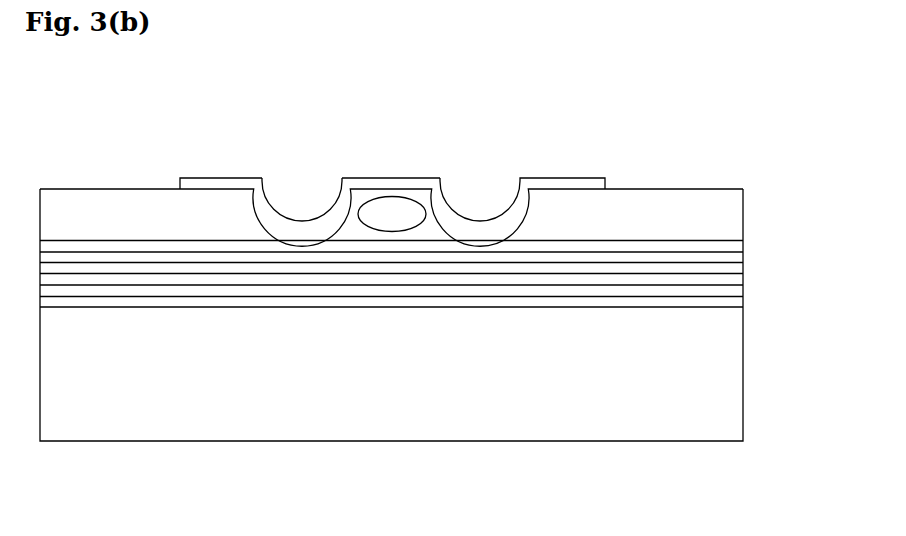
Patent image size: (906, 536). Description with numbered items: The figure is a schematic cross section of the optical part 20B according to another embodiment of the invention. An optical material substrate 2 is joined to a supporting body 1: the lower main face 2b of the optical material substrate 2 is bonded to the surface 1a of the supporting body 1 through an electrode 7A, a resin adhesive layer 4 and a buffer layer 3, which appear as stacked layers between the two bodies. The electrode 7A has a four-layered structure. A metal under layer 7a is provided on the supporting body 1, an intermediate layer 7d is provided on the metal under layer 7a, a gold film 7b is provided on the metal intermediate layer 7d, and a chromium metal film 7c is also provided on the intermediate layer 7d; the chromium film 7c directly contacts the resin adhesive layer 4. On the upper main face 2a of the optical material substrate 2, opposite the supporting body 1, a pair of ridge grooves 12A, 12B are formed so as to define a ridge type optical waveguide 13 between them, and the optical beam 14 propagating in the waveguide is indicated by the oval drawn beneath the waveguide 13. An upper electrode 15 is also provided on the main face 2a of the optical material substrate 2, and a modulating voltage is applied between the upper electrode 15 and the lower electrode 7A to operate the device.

The supporting body 1 is at (744, 381).
The surface of the supporting body 1a is at (657, 307).
The optical material substrate 2 is at (736, 212).
The main face of the optical material substrate 2a is at (633, 190).
The main face of the optical material substrate 2b is at (612, 243).
The buffer layer 3 is at (736, 249).
The resin adhesive layer 4 is at (736, 263).
The electrode 7A is at (749, 267).
The metal under layer 7a is at (518, 303).
The gold film 7b is at (408, 280).
The chromium metal film 7c is at (349, 270).
The intermediate layer 7d is at (461, 292).
The ridge groove 12A is at (303, 230).
The ridge groove 12B is at (481, 230).
The optical waveguide 13 is at (420, 193).
The optical beam 14 is at (393, 213).
The upper electrode 15 is at (215, 180).
The optical part 20B is at (746, 161).